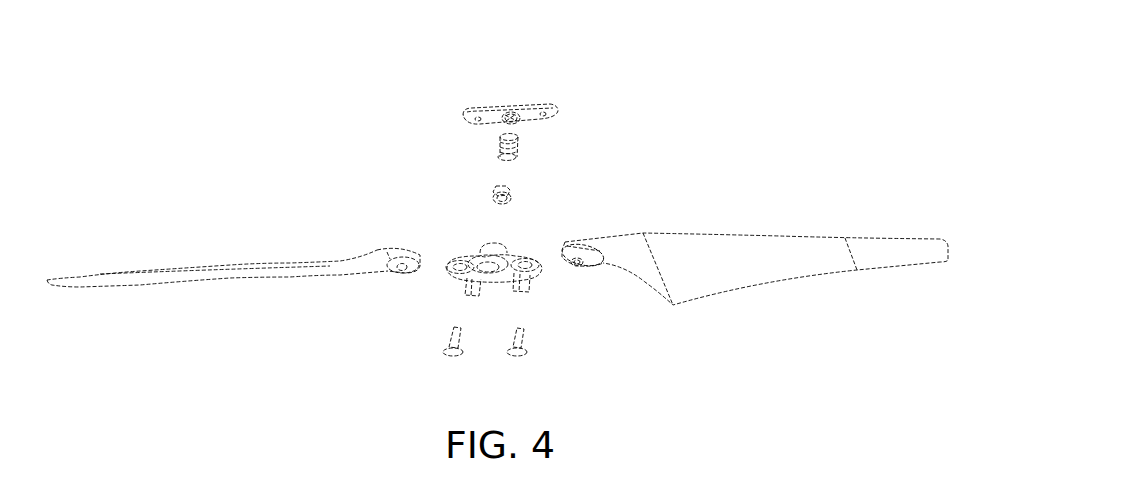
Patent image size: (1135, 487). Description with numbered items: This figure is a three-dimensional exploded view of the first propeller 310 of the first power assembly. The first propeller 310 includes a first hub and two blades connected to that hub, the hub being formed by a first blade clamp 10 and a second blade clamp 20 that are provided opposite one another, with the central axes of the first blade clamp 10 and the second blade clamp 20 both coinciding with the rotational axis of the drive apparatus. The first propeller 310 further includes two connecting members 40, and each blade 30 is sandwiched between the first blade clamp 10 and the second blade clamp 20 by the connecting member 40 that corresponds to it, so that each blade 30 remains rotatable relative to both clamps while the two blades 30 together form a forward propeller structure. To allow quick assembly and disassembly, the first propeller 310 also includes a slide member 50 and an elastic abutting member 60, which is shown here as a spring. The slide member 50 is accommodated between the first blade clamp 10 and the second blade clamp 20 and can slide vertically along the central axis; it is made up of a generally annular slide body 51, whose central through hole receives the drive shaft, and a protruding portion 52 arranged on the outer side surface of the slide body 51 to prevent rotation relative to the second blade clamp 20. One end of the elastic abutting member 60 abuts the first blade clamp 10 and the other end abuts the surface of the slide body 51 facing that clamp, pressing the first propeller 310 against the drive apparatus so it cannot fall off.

The first propeller 310 is at (530, 39).
The first blade clamp 10 is at (540, 107).
The elastic abutting member 60 is at (521, 139).
The slide member 50 is at (373, 153).
The protruding portion 52 is at (497, 190).
The slide body 51 is at (492, 195).
The blade 30 is at (370, 265).
The second blade clamp 20 is at (543, 265).
The connecting member 40 is at (447, 341).